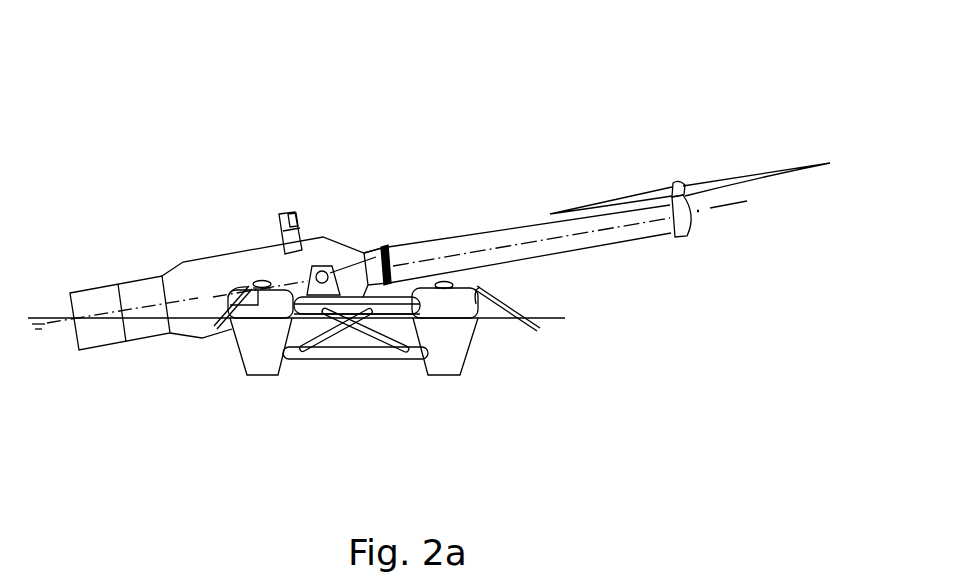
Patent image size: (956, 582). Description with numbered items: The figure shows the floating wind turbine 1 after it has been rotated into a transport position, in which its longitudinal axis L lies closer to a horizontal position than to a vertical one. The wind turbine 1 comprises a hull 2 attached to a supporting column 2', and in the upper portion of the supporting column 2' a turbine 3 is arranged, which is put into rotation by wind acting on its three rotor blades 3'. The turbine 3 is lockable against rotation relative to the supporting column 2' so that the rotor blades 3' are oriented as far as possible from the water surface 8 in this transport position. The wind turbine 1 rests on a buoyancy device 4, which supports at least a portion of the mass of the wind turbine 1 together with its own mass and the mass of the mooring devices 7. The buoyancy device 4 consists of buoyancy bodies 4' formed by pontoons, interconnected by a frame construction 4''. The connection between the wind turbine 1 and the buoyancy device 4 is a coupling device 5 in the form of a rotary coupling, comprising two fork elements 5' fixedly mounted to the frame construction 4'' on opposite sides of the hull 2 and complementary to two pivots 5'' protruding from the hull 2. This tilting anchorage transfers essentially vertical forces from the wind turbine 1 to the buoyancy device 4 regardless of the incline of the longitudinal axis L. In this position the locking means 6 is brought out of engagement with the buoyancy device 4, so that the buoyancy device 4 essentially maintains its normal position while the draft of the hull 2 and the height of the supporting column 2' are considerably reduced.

The wind turbine 1 is at (233, 155).
The hull 2 is at (218, 249).
The supporting column 2' is at (526, 222).
The wind turbine (turbine) 3 is at (671, 174).
The rotor blades 3' is at (692, 237).
The buoyancy device 4 is at (417, 410).
The buoyancy bodies 4' is at (252, 355).
The frame construction 4'' is at (423, 356).
The coupling device 5 is at (299, 203).
The fork elements 5' is at (367, 223).
The pivots 5'' is at (357, 363).
The locking means 6 is at (282, 213).
The mooring devices 7 is at (507, 310).
The water surface 8 is at (45, 312).
The longitudinal axis L is at (713, 212).